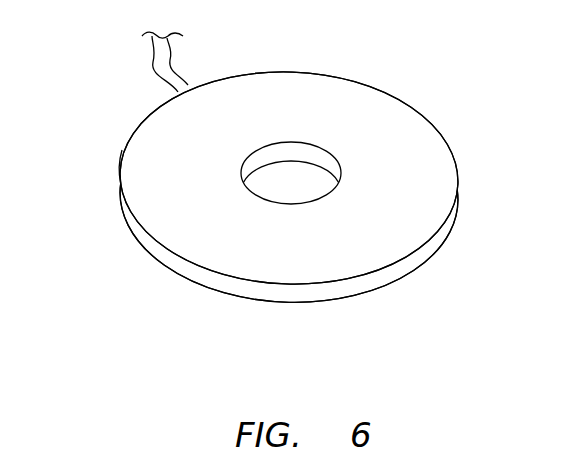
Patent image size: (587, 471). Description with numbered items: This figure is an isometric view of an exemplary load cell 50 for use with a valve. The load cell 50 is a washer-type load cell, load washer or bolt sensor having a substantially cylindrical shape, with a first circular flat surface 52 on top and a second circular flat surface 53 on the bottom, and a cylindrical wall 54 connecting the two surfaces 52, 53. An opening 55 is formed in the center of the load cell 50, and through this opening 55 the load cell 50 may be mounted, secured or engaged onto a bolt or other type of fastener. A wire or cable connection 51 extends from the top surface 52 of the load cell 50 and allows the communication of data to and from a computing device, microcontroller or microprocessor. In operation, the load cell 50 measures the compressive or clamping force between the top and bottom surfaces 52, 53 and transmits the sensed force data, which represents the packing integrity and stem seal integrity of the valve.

The load cell 50 is at (458, 197).
The wire or cable connection 51 is at (182, 65).
The first circular flat surface 52 is at (415, 130).
The second circular flat surface 53 is at (131, 236).
The cylindrical wall 54 is at (123, 168).
The opening 55 is at (290, 152).